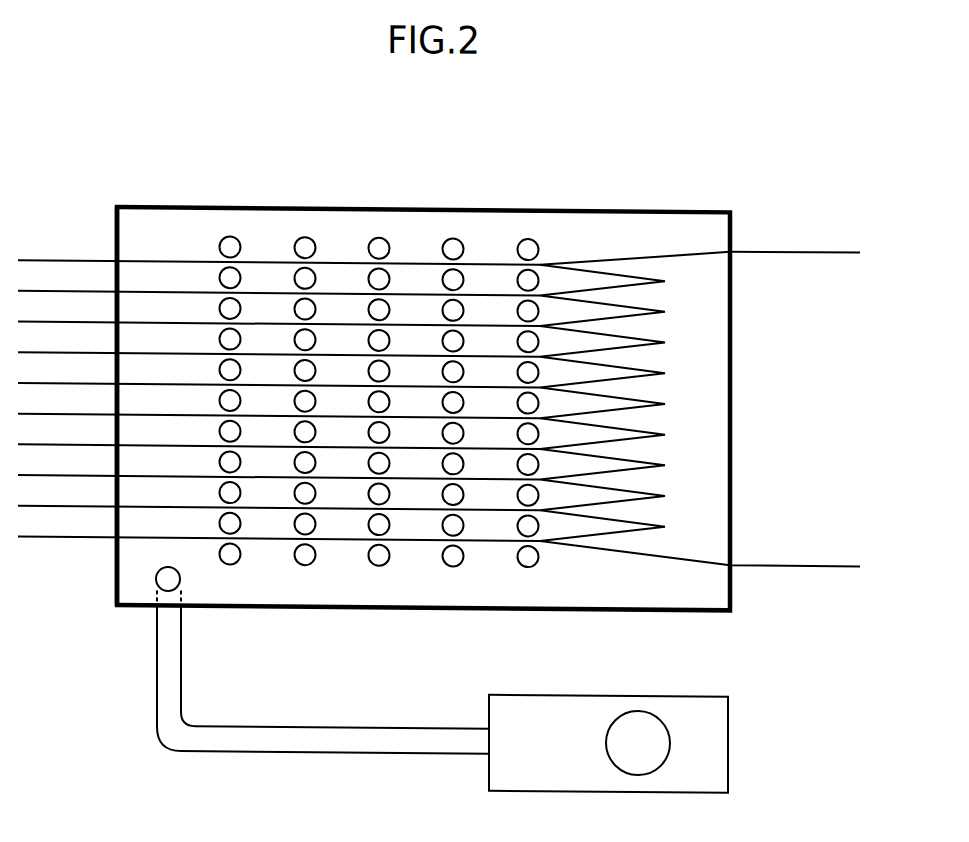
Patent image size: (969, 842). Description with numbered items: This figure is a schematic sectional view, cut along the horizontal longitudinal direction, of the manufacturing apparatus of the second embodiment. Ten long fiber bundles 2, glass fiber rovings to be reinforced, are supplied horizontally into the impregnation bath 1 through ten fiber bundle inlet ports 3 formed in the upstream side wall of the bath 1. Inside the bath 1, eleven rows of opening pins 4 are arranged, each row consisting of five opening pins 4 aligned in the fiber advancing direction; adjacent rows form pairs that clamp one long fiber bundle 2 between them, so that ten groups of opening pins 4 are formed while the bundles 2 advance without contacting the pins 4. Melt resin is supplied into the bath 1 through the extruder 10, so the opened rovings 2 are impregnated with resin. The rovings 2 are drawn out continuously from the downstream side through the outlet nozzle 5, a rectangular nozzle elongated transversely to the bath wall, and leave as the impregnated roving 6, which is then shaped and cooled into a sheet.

The impregnation bath 1 is at (341, 201).
The long fiber bundle 2 is at (52, 320).
The fiber bundle inlet port 3 is at (116, 290).
The opening pin 4 is at (528, 241).
The outlet nozzle 5 is at (737, 244).
The impregnated roving 6 is at (808, 247).
The extruder 10 is at (708, 704).